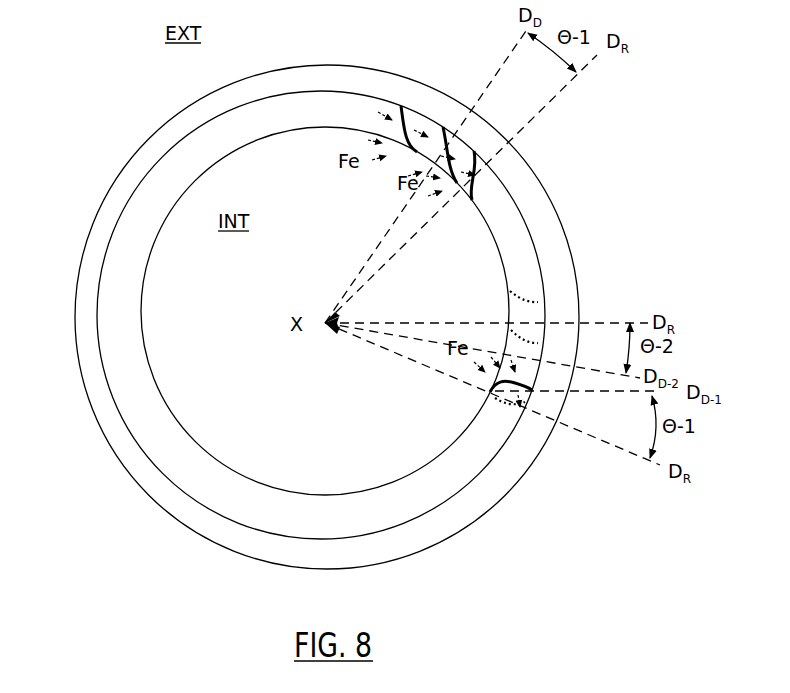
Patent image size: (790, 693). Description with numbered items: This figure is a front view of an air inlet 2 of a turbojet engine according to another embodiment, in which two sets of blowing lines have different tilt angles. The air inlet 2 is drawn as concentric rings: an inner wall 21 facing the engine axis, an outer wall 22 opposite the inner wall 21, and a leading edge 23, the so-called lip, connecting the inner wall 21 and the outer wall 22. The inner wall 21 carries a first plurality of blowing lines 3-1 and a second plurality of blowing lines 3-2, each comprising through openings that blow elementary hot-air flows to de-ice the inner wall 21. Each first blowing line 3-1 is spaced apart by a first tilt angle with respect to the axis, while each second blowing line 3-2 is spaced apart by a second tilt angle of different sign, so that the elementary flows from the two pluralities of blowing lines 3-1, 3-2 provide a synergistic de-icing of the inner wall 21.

The air inlet 2 is at (98, 99).
The inner wall 21 is at (139, 335).
The outer wall 22 is at (87, 283).
The leading edge 23 is at (106, 233).
The first blowing line 3-1 is at (372, 113).
The second blowing line 3-2 is at (531, 284).